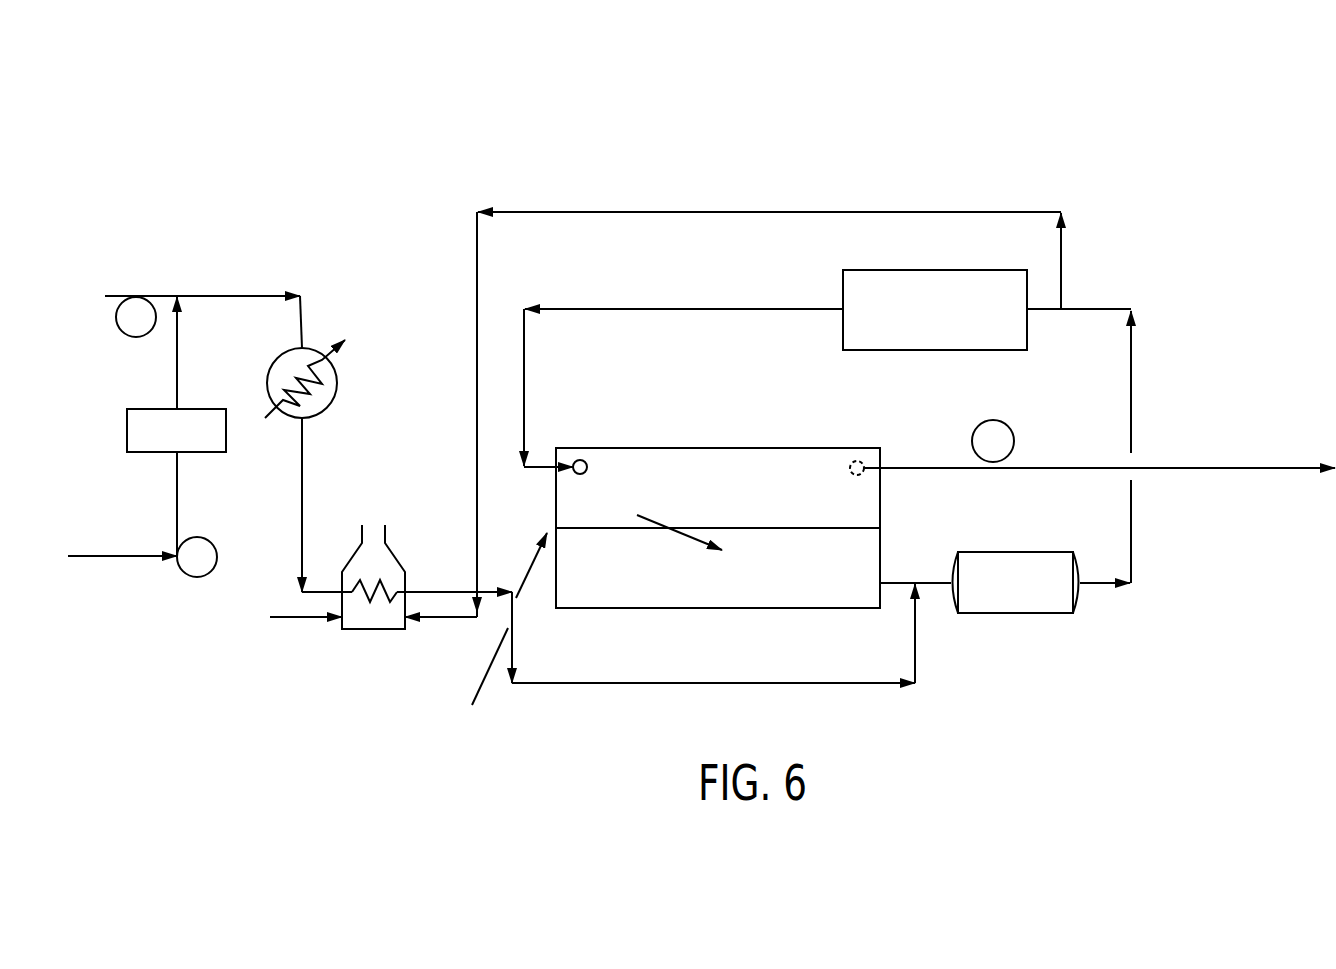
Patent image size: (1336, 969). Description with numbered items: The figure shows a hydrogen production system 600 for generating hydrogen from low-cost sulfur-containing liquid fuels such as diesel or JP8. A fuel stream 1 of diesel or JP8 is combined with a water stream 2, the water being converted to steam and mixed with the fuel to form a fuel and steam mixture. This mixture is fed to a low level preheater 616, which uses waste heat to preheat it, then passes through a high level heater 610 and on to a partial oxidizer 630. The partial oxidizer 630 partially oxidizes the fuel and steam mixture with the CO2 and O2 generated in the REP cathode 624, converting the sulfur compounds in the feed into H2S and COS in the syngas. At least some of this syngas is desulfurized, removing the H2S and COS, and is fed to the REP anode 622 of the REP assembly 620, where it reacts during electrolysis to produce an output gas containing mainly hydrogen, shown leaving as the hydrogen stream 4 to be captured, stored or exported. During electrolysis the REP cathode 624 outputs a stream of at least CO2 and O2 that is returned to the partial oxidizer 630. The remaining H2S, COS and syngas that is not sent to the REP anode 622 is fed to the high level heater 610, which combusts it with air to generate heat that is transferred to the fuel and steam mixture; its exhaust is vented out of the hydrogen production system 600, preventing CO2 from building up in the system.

The hydrogen production system 600 is at (378, 213).
The high level heater 610 is at (369, 629).
The low level preheater 616 is at (338, 389).
The REP assembly 620 is at (742, 616).
The REP anode 622 is at (880, 487).
The REP cathode 624 is at (664, 610).
The partial oxidizer 630 is at (1035, 552).
The diesel/JP8 fuel stream 1 is at (136, 317).
The water stream 2 is at (197, 557).
The hydrogen product stream 4 is at (993, 441).